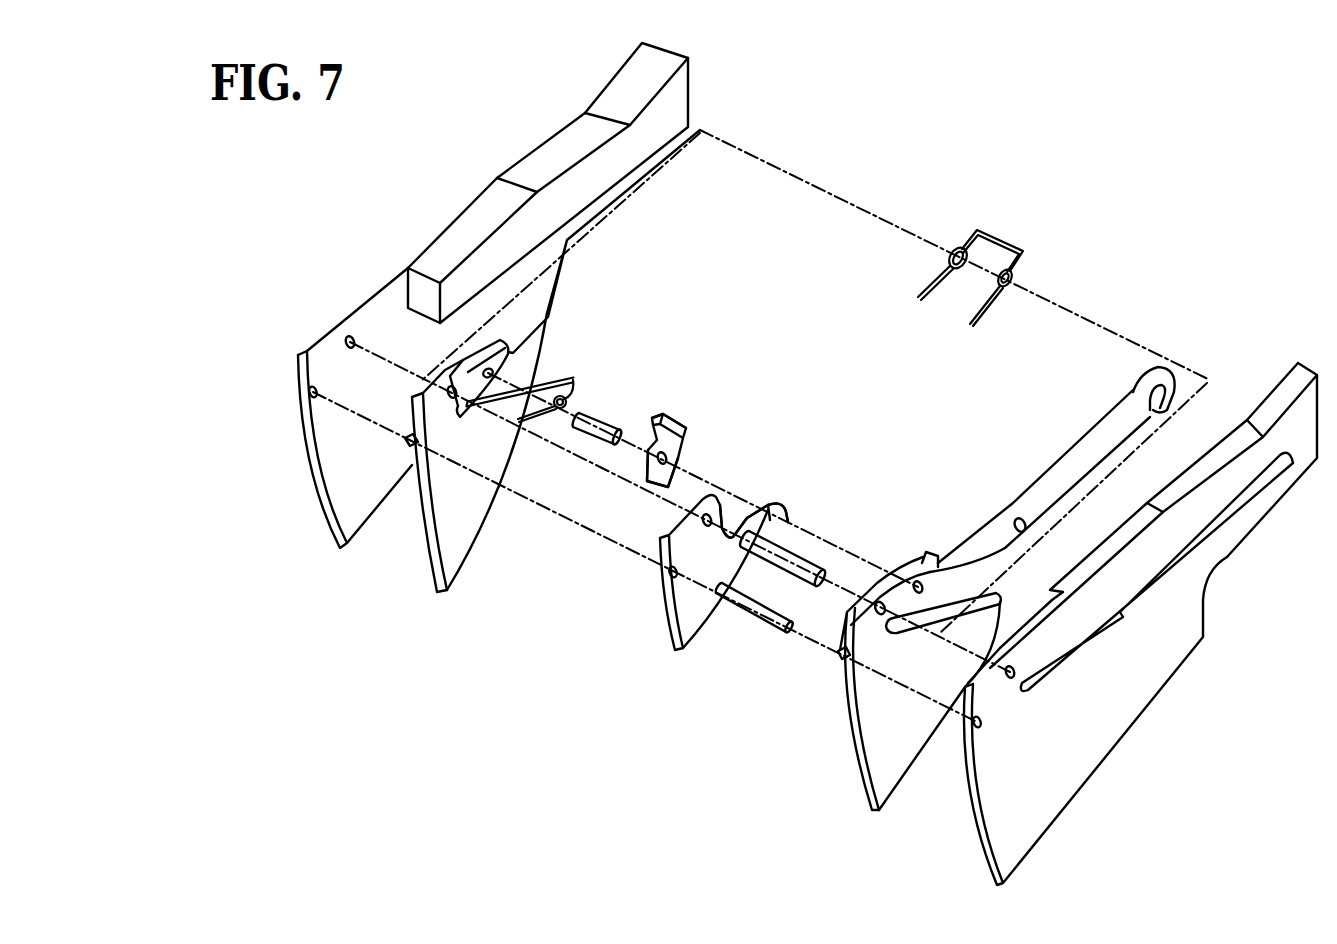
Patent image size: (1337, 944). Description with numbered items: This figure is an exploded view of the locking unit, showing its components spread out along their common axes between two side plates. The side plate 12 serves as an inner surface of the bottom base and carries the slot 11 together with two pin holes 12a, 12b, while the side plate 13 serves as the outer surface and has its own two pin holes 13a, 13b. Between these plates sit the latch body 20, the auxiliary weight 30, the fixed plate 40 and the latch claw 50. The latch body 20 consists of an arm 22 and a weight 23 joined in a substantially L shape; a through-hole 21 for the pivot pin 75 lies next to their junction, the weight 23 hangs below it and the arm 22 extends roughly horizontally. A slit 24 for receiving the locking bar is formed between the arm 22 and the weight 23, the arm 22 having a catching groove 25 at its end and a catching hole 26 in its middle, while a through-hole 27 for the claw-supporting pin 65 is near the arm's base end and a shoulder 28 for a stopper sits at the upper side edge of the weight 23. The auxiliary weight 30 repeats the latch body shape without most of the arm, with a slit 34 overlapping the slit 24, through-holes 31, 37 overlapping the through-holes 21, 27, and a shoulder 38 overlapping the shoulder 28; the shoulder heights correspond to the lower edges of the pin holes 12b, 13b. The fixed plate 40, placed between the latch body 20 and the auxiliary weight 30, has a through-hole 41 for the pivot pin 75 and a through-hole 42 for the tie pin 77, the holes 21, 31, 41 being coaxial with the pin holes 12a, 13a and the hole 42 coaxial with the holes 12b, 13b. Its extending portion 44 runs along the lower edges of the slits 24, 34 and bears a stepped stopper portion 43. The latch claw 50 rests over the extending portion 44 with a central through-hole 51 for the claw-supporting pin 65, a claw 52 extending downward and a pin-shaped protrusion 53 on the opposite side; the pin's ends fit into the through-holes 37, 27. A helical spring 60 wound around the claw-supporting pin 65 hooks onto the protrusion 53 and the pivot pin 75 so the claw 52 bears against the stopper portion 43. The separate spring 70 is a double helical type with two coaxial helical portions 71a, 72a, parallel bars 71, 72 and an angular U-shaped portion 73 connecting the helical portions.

The slot 11 is at (1138, 600).
The side plate 12 is at (1093, 752).
The pin hole 12a is at (1012, 679).
The pin hole 12b is at (981, 728).
The side plate 13 is at (330, 497).
The pin hole 13a is at (347, 337).
The pin hole 13b is at (309, 396).
The latch body 20 is at (937, 550).
The through-hole 21 is at (874, 610).
The arm 22 is at (1075, 490).
The weight 23 is at (860, 774).
The slit 24 is at (896, 637).
The catching groove 25 is at (1140, 382).
The catching hole 26 is at (1017, 519).
The through-hole 27 is at (922, 560).
The shoulder 28 is at (838, 656).
The auxiliary weight 30 is at (458, 572).
The through-hole 31 is at (452, 400).
The slit 34 is at (470, 420).
The through-hole 37 is at (494, 371).
The shoulder 38 is at (405, 441).
The fixed plate 40 is at (680, 635).
The through-hole 41 is at (708, 527).
The through-hole 42 is at (670, 573).
The stopper portion 43 is at (727, 505).
The extending portion 44 is at (777, 507).
The latch claw 50 is at (688, 432).
The through-hole 51 is at (668, 458).
The claw 52 is at (665, 490).
The protrusion 53 is at (668, 418).
The helical spring 60 is at (575, 378).
The claw-supporting pin 65 is at (610, 420).
The spring 70 is at (1005, 234).
The bar 71 is at (925, 293).
The helical portion 71a is at (948, 258).
The bar 72 is at (982, 314).
The helical portion 72a is at (1014, 276).
The angular U-shaped portion 73 is at (982, 230).
The pivot pin 75 is at (798, 555).
The tie pin 77 is at (742, 614).